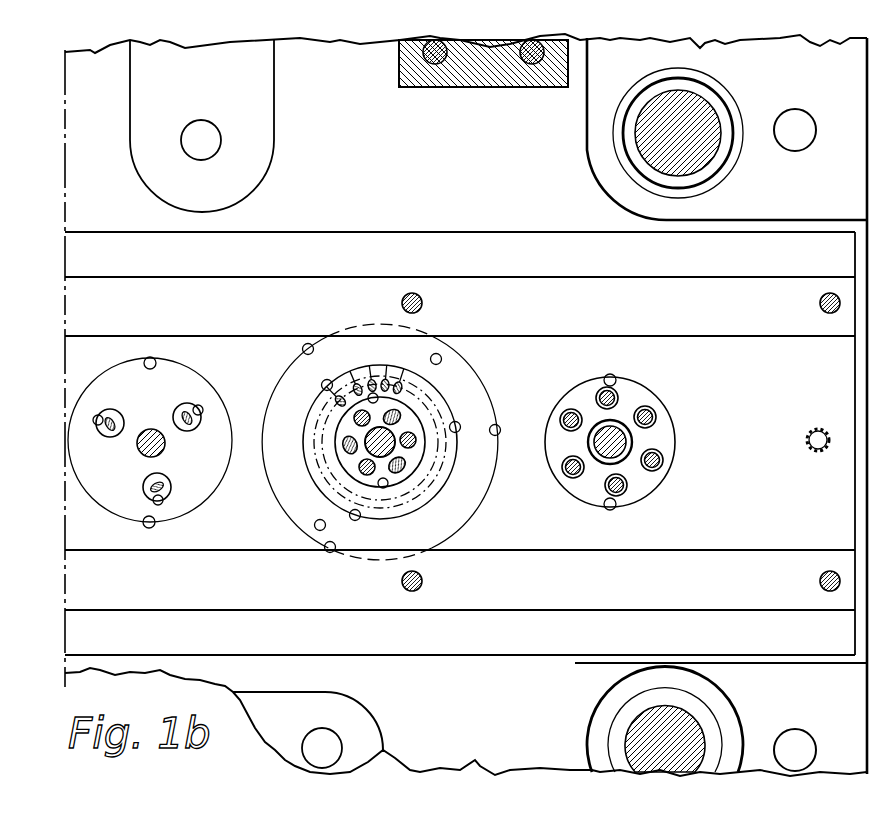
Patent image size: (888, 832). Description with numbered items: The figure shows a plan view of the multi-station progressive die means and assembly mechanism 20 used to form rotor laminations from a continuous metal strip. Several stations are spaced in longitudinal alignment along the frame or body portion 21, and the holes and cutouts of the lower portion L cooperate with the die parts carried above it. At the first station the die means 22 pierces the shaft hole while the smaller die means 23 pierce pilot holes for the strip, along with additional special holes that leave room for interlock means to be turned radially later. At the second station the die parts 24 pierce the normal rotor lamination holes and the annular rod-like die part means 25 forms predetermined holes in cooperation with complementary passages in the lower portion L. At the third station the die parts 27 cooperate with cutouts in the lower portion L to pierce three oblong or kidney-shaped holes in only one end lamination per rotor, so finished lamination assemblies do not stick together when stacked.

The multi-station progressive die means and assembly mechanism 20 is at (68, 88).
The frame or body portion 21 is at (68, 632).
The lower portion L is at (70, 310).
The die means 22 is at (622, 441).
The smaller die means 23 is at (568, 416).
The die parts 24 is at (396, 380).
The annular rod-like die part means 25 is at (410, 441).
The die parts 27 is at (112, 410).